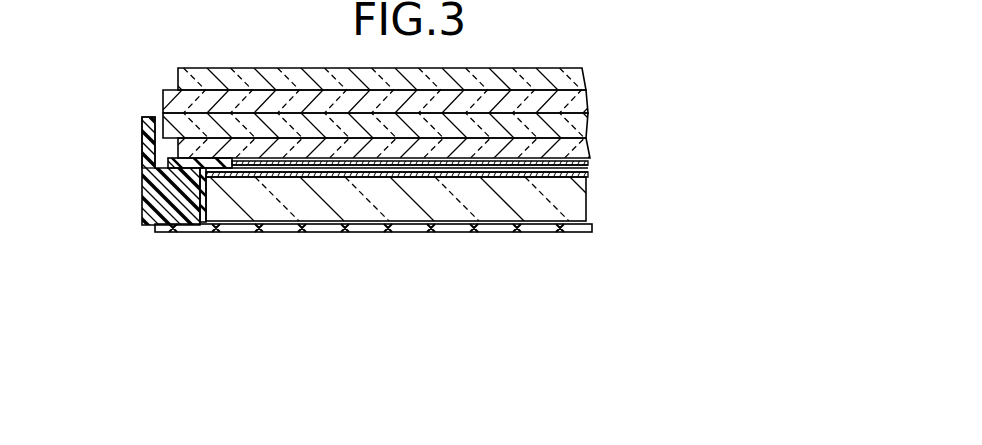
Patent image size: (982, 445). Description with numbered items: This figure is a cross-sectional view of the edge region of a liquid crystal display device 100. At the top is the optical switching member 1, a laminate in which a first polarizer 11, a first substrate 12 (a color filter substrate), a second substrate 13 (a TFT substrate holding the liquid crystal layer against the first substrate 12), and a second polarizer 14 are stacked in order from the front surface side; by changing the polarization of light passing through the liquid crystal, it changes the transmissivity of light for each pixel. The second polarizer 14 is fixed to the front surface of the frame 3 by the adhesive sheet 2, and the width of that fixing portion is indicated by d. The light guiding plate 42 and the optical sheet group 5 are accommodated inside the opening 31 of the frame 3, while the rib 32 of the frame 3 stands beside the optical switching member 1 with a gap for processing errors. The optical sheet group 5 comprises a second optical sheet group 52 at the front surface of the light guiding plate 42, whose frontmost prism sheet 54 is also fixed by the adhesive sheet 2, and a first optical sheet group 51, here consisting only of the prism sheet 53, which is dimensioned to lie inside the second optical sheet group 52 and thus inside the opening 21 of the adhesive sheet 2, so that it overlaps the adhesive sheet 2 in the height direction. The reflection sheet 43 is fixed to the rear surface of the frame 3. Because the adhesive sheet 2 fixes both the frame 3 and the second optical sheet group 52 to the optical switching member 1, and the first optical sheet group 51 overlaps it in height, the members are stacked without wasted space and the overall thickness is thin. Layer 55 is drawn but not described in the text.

The optical switching member 1 is at (438, 100).
The first polarizer 11 is at (588, 80).
The first substrate 12 is at (590, 103).
The second substrate 13 is at (592, 126).
The second polarizer 14 is at (425, 142).
The adhesive sheet 2 is at (216, 233).
The opening of the adhesive sheet 21 is at (250, 168).
The frame 3 is at (150, 197).
The opening of the frame 31 is at (200, 170).
The rib 32 is at (142, 131).
The light guiding plate 42 is at (412, 261).
The reflection sheet 43 is at (583, 233).
The optical sheet group 5 is at (489, 199).
The first optical sheet group 51 is at (397, 168).
The second optical sheet group 52 is at (467, 208).
The prism sheet 53 is at (590, 166).
The prism sheet 54 is at (592, 175).
The light guide plate 55 is at (588, 185).
The liquid crystal display device 100 is at (300, 312).